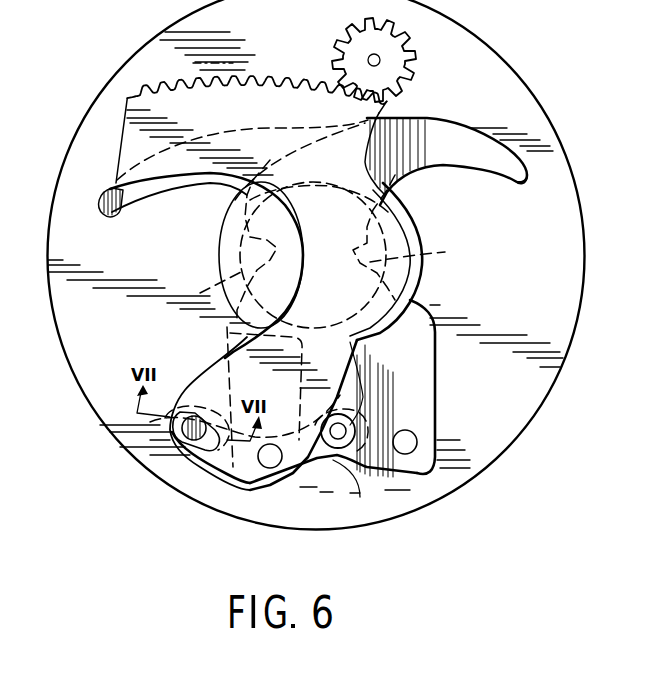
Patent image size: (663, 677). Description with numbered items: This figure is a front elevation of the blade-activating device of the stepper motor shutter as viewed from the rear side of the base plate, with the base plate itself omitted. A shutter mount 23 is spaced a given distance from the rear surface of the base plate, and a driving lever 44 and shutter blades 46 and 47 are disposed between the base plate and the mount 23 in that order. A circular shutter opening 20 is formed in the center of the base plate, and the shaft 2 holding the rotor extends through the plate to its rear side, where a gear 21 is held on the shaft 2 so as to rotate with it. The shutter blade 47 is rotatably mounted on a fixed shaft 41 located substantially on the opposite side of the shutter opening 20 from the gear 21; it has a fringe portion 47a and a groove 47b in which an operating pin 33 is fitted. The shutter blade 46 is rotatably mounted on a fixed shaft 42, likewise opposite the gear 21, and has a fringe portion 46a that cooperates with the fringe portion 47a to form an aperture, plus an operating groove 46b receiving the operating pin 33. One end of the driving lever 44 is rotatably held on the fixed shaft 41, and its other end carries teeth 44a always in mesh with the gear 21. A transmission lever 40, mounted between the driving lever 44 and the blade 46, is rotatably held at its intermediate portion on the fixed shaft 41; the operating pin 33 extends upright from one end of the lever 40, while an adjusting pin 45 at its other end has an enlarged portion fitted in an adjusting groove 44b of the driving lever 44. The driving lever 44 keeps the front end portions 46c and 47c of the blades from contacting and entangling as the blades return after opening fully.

The shaft 2 is at (368, 58).
The gear 21 is at (415, 54).
The teeth 44a is at (236, 72).
The driving lever 44 is at (135, 137).
The shutter blade 47 is at (220, 181).
The front end portion 47c is at (117, 214).
The fringe portion 47a is at (223, 290).
The shutter blade 46 is at (447, 162).
The front end portion 46c is at (517, 188).
The fringe portion 46a is at (413, 258).
The shutter opening 20 is at (313, 323).
The shutter mount 23 is at (562, 367).
The operating pin 33 is at (357, 420).
The fixed shaft 42 is at (417, 442).
The adjusting pin 45 is at (170, 438).
The adjusting groove 44b is at (193, 457).
The transmission lever 40 is at (228, 473).
The fixed shaft 41 is at (265, 460).
The groove 47b is at (320, 472).
The operating groove 46b is at (338, 458).